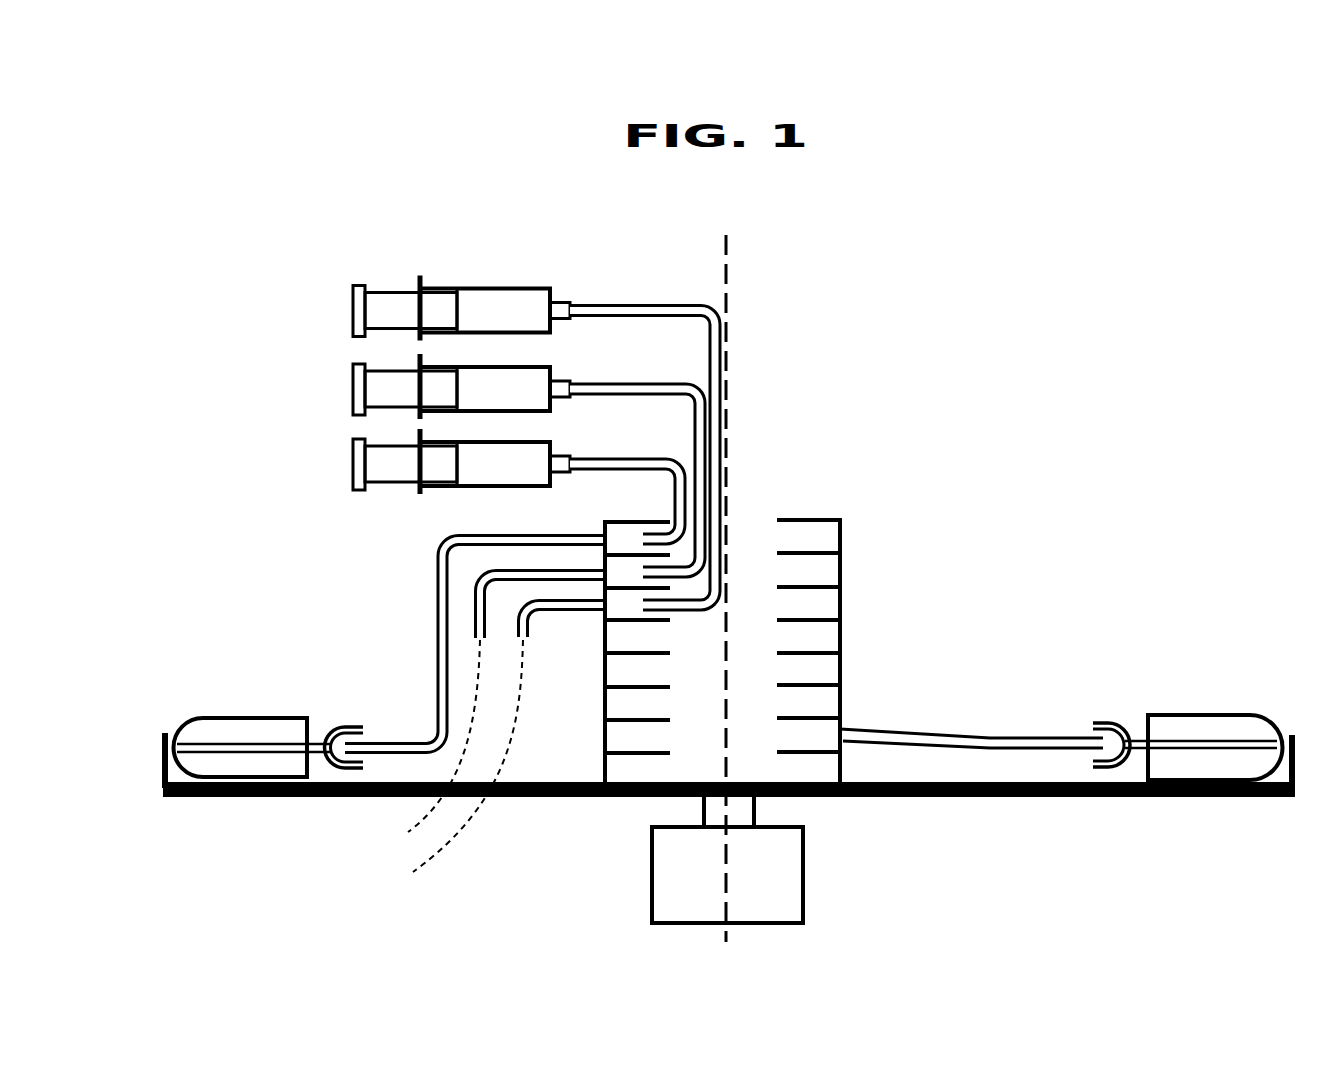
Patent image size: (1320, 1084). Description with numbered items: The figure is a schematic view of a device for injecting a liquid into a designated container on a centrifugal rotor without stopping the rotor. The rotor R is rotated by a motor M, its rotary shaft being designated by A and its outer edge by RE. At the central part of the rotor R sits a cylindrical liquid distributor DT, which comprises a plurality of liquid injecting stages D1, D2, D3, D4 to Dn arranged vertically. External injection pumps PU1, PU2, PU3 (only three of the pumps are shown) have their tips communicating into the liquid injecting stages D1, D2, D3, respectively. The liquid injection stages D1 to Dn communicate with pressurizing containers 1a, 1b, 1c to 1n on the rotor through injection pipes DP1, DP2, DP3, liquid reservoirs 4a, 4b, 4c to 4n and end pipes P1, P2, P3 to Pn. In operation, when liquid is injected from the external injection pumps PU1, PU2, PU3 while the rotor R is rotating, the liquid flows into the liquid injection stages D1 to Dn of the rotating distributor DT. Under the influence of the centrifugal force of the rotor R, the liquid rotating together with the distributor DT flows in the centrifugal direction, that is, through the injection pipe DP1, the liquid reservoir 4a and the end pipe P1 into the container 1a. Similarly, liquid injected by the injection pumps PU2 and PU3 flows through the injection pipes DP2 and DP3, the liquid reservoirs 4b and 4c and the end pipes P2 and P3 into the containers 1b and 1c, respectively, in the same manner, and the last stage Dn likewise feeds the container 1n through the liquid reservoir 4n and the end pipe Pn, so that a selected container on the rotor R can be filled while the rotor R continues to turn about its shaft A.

The external injection pump PU1 is at (339, 313).
The external injection pump PU2 is at (339, 387).
The external injection pump PU3 is at (339, 463).
The injection pipe DP1 is at (427, 543).
The injection pipe DP2 is at (465, 585).
The injection pipe DP3 is at (508, 621).
The pressurizing container 1a is at (248, 705).
The pressurizing container 1b is at (212, 837).
The pressurizing container 1c is at (212, 876).
The pressurizing container 1n is at (1228, 701).
The end pipe P1 is at (320, 727).
The end pipe P2 is at (323, 837).
The end pipe P3 is at (323, 876).
The end pipe Pn is at (1136, 727).
The liquid reservoir 4a is at (361, 712).
The liquid reservoir 4b is at (384, 837).
The liquid reservoir 4c is at (387, 877).
The liquid reservoir 4n is at (1094, 711).
The rotary shaft A is at (743, 261).
The liquid distributor DT is at (810, 508).
The liquid injecting stage D1 is at (845, 536).
The liquid injecting stage D2 is at (845, 568).
The liquid injecting stage D3 is at (845, 601).
The liquid injecting stage D4 is at (845, 633).
The liquid injecting stage Dn is at (845, 722).
The motor M is at (670, 881).
The rotor R is at (975, 809).
The outer edge of the rotor RE is at (1295, 811).